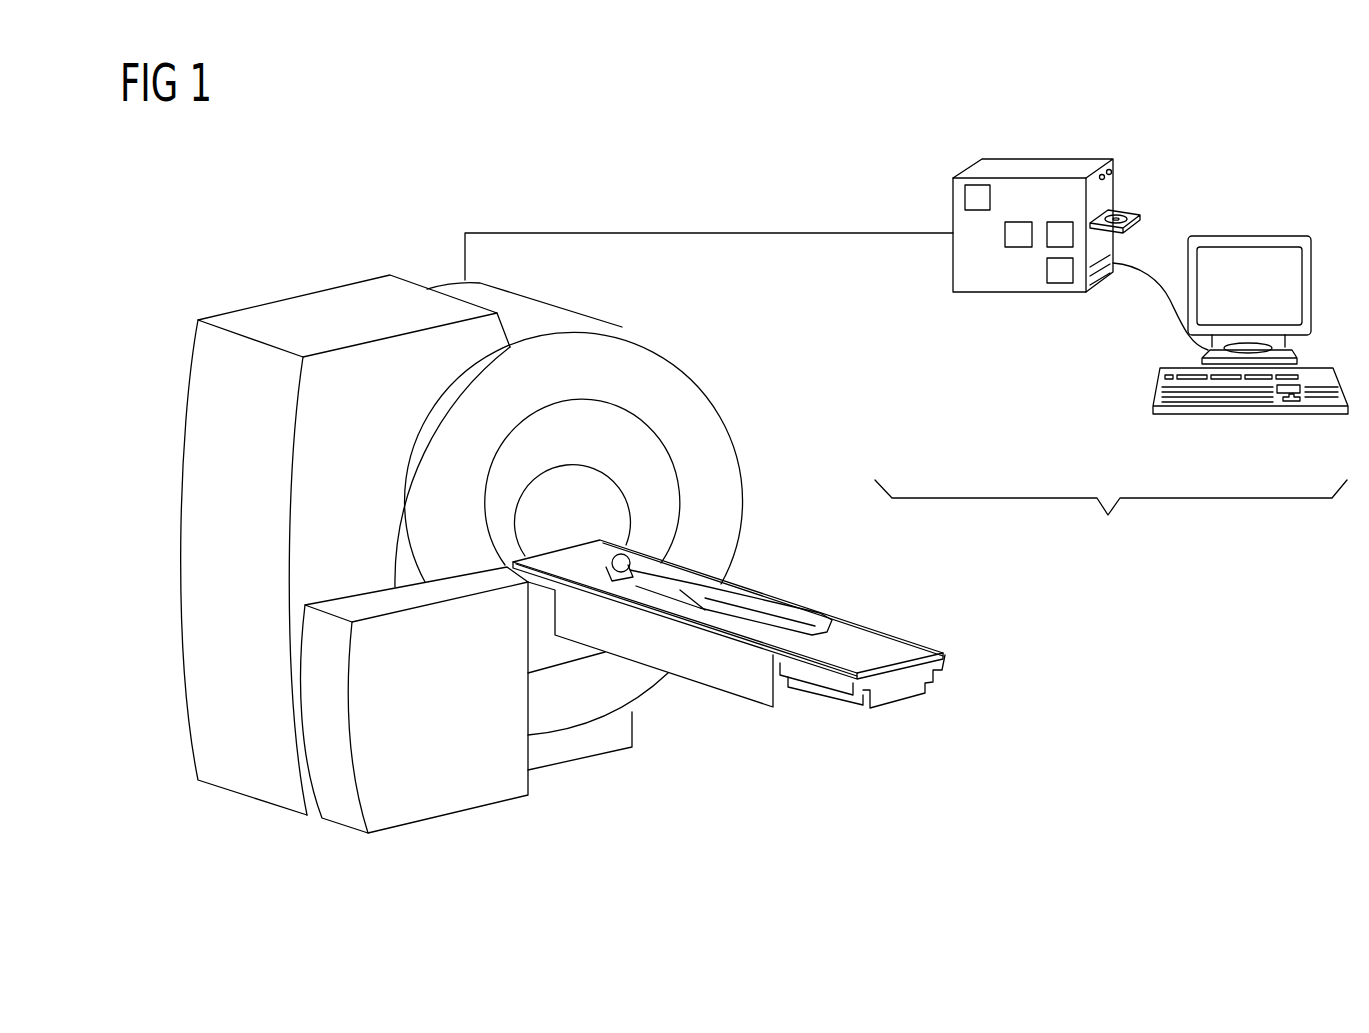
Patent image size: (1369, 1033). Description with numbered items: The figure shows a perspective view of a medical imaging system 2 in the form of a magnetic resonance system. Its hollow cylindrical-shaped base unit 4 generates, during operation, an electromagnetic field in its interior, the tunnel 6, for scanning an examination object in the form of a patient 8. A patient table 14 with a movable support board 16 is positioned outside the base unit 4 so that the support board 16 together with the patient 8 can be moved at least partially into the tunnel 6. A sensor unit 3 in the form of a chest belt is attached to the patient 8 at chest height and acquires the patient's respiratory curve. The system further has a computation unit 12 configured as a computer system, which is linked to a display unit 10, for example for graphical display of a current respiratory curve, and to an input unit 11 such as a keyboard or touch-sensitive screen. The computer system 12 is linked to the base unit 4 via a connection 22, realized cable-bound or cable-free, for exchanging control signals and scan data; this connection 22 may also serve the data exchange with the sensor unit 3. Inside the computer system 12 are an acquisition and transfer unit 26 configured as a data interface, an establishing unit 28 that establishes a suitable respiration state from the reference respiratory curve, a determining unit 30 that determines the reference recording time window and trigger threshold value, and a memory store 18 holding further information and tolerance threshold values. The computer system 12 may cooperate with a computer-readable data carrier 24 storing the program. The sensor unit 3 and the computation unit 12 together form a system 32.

The medical imaging system 2 is at (733, 355).
The sensor unit 3 is at (690, 560).
The base unit 4 is at (707, 412).
The tunnel 6 is at (588, 493).
The patient 8 is at (740, 593).
The display unit 10 is at (1251, 240).
The input unit 11 is at (1241, 406).
The computation unit 12 is at (1078, 167).
The patient table 14 is at (747, 675).
The support board 16 is at (897, 690).
The memory store 18 is at (965, 195).
The connection 22 is at (677, 231).
The computer-readable data carrier 24 is at (1122, 212).
The acquisition and transfer unit 26 is at (1018, 222).
The establishing unit 28 is at (1047, 245).
The determining unit 30 is at (1060, 283).
The system 32 is at (1111, 517).